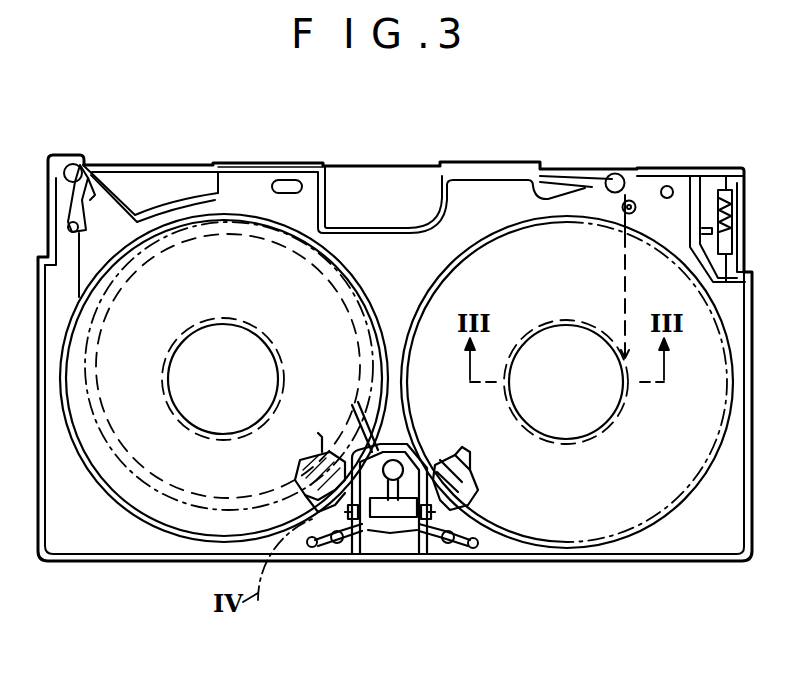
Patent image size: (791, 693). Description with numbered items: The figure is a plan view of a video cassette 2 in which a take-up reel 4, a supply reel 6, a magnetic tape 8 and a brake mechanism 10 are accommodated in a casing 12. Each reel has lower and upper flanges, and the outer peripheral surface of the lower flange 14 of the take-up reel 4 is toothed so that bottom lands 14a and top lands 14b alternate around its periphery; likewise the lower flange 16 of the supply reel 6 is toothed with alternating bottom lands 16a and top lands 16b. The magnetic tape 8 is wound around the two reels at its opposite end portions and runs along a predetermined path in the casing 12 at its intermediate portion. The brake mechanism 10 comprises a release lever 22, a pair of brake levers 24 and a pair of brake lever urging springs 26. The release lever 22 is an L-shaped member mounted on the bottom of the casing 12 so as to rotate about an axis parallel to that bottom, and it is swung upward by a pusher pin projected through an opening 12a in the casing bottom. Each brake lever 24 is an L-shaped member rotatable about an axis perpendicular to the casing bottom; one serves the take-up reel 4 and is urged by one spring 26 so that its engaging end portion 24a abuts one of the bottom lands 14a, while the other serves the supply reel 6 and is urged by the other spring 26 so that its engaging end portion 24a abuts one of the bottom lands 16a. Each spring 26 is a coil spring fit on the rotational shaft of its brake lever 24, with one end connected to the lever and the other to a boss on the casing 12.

The video cassette 2 is at (654, 159).
The take-up reel 4 is at (587, 520).
The supply reel 6 is at (200, 527).
The magnetic tape 8 is at (391, 165).
The brake mechanism 10 is at (385, 539).
The casing 12 is at (80, 530).
The opening 12a is at (429, 442).
The lower flange of the take-up reel 14 is at (482, 502).
The bottom lands 14a is at (475, 490).
The top lands 14b is at (458, 462).
The lower flange of the supply reel 16 is at (290, 468).
The bottom lands 16a is at (290, 494).
The top lands 16b is at (316, 428).
The release lever 22 is at (362, 405).
The brake levers 24 is at (352, 561).
The engaging end portion 24a is at (307, 547).
The brake lever urging springs 26 is at (345, 571).